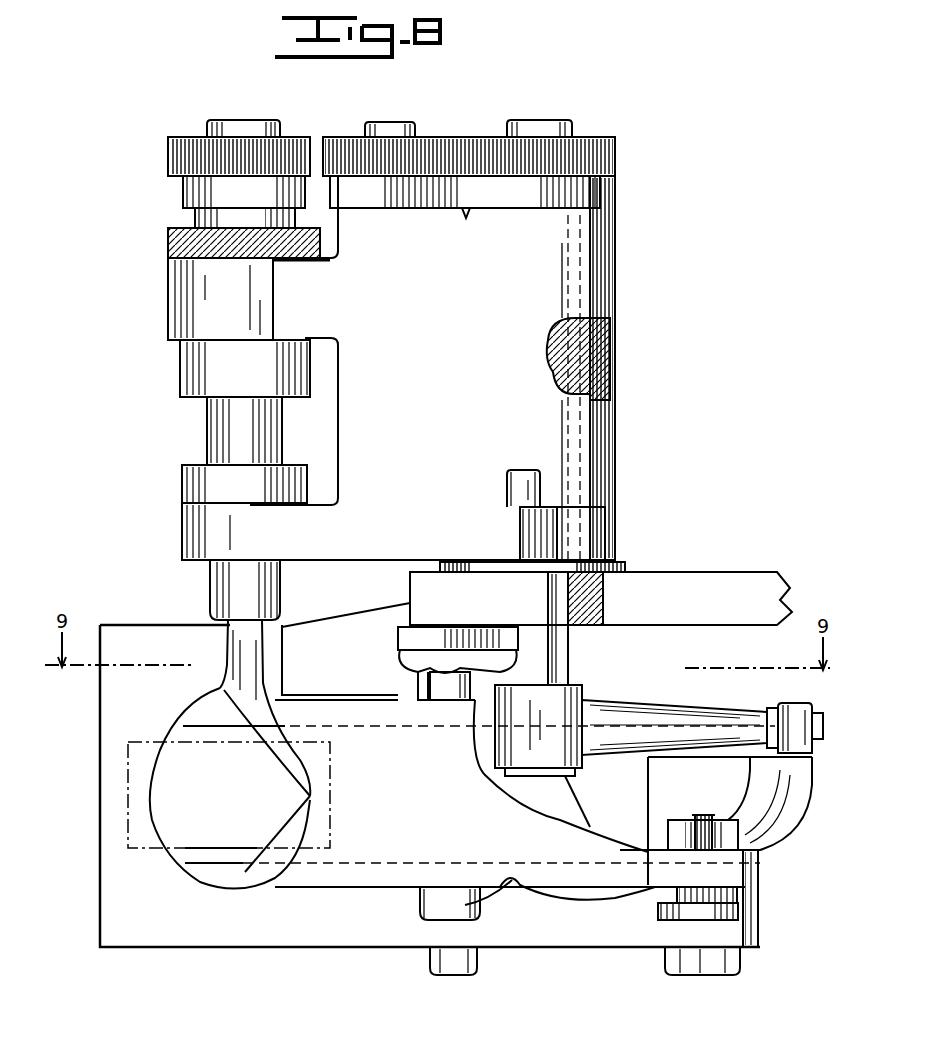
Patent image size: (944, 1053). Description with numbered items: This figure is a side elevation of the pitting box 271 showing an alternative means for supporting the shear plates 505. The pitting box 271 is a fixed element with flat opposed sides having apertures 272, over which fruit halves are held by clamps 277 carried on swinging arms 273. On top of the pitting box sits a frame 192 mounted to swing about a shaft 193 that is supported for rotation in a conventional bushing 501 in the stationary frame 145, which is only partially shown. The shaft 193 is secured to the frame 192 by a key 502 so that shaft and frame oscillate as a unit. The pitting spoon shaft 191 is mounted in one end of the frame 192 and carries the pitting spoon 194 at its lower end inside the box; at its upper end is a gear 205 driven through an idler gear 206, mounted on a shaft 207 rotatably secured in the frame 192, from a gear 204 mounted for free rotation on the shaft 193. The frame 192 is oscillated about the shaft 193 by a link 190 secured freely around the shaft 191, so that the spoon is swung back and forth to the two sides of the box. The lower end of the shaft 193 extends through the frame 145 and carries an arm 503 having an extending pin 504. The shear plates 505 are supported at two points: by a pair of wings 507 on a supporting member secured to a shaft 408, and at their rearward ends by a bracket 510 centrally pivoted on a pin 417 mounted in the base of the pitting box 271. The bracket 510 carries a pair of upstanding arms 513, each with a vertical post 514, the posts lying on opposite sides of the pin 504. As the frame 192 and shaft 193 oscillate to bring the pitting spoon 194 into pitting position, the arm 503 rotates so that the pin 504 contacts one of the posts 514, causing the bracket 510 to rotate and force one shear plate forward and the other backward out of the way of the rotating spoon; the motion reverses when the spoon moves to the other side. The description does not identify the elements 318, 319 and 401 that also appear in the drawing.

The stationary frame 145 is at (732, 609).
The link 190 is at (190, 244).
The pitting spoon shaft 191 is at (240, 128).
The frame 192 is at (455, 309).
The shaft 193 is at (548, 134).
The pitting spoon 194 is at (285, 740).
The gear 204 is at (596, 159).
The gear 205 is at (200, 157).
The idler gear 206 is at (398, 160).
The shaft 207 is at (392, 131).
The pitting box 271 is at (97, 925).
The apertures 272 is at (200, 846).
The arms 273 is at (205, 742).
The clamps 277 is at (262, 809).
The pin 318 is at (522, 492).
The arm 319 is at (415, 528).
The base plate 401 is at (178, 924).
The shaft 408 is at (468, 907).
The pin 417 is at (705, 815).
The bushing 501 is at (617, 568).
The key 502 is at (572, 373).
The arm 503 is at (630, 737).
The pin 504 is at (820, 716).
The shear plates 505 is at (382, 769).
The wings 507 is at (452, 690).
The bracket 510 is at (725, 897).
The upstanding arms 513 is at (770, 796).
The vertical posts 514 is at (796, 742).